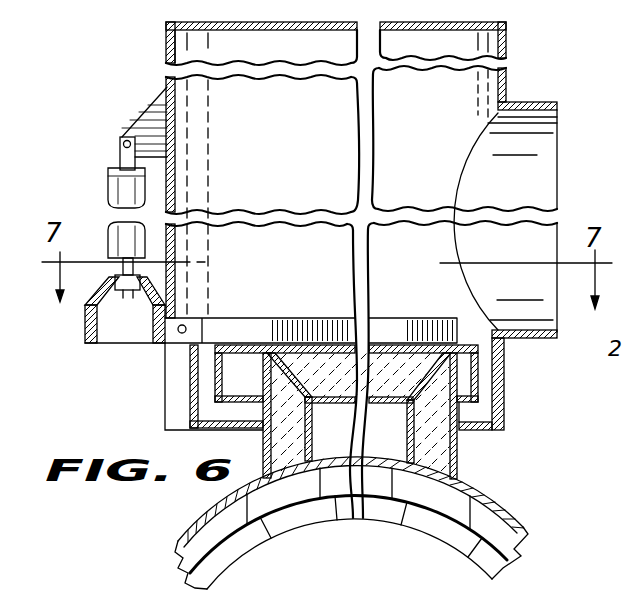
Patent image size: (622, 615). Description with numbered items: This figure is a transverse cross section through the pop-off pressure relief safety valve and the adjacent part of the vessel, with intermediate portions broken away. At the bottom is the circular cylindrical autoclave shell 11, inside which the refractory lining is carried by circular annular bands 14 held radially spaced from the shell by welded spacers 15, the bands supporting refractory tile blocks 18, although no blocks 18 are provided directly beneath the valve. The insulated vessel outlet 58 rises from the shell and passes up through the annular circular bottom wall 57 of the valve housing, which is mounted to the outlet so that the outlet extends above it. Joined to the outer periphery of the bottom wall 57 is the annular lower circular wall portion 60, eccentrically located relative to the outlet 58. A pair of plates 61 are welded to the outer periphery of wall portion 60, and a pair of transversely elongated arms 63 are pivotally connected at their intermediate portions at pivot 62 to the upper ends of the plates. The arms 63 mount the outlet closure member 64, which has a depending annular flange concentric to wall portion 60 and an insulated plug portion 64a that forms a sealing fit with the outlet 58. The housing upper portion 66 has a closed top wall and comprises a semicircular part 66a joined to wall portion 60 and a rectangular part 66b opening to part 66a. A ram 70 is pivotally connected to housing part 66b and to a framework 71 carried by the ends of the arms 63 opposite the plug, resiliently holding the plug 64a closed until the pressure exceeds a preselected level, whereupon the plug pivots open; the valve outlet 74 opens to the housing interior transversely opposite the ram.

The rectangular housing part 66b is at (167, 47).
The upper portion of valve housing 66 is at (498, 24).
The semicircular housing part 66a is at (507, 80).
The valve outlet 74 is at (545, 101).
The ram 70 is at (112, 192).
The framework 71 is at (91, 303).
The pivot 62 is at (186, 326).
The arms 63 is at (305, 318).
The outlet closure member 64 is at (246, 346).
The insulated plug portion 64a is at (386, 356).
The plates 61 is at (164, 410).
The lower circular wall portion 60 is at (506, 400).
The bottom wall 57 is at (493, 432).
The insulated vessel outlet 58 is at (459, 466).
The autoclave shell 11 is at (525, 528).
The annular bands 14 is at (497, 556).
The spacers 15 is at (447, 508).
The refractory tile blocks 18 is at (233, 566).